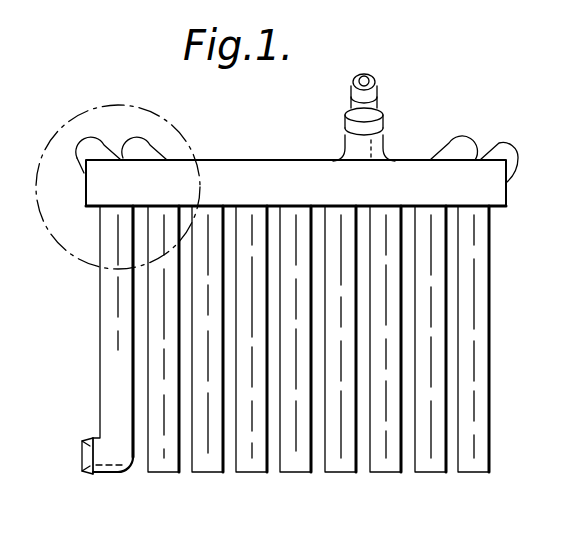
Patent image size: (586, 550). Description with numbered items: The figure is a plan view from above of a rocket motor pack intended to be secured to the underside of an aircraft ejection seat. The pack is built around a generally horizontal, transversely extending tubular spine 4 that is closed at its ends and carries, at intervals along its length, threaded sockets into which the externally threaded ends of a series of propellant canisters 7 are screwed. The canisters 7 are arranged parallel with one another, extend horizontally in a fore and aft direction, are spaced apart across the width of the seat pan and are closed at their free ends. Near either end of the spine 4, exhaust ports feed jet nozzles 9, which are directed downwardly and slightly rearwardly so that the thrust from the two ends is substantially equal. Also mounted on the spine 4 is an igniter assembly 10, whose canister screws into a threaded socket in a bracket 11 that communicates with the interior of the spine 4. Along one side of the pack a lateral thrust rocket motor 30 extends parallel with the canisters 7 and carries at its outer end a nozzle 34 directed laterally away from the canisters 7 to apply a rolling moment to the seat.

The tubular spine 4 is at (487, 192).
The canister 7 is at (158, 460).
The jet nozzle 9 is at (102, 148).
The igniter assembly 10 is at (389, 108).
The bracket 11 is at (333, 149).
The lateral thrust rocket motor 30 is at (100, 348).
The nozzle 34 is at (88, 437).